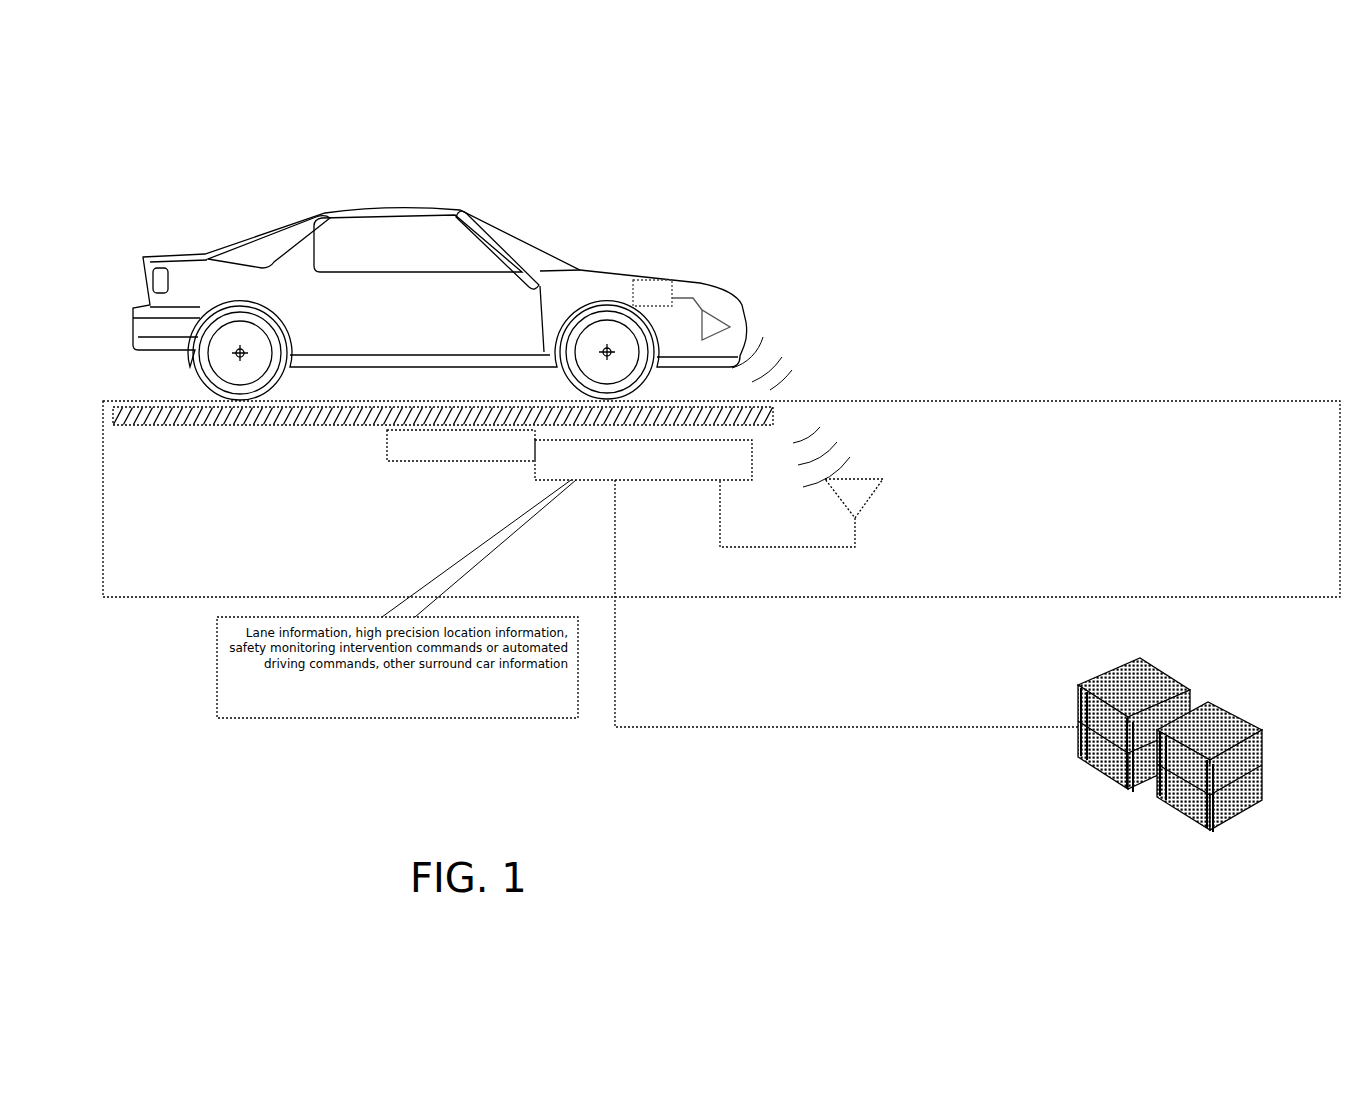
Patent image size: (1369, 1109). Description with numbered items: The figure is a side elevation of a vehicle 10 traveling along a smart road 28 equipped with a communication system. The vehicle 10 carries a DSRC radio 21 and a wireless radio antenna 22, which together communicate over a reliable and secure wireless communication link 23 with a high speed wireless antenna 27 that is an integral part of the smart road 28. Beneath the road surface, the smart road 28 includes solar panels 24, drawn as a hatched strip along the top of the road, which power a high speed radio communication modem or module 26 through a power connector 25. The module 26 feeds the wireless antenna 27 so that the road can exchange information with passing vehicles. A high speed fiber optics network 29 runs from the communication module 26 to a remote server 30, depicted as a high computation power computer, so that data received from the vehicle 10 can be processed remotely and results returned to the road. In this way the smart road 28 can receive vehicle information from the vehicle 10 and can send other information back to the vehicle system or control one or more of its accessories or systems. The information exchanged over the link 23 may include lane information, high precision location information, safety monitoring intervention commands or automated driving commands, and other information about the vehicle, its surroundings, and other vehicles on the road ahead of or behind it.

The vehicle 10 is at (358, 208).
The DSRC radio 21 is at (652, 276).
The wireless radio antenna 22 is at (716, 312).
The wireless communication link 23 is at (790, 340).
The solar panels 24 is at (165, 428).
The power connector 25 is at (457, 462).
The high speed radio communication module 26 is at (753, 443).
The high speed wireless antenna 27 is at (855, 483).
The smart road 28 is at (1203, 420).
The high speed fiber optics network 29 is at (977, 725).
The remote server 30 is at (1140, 660).